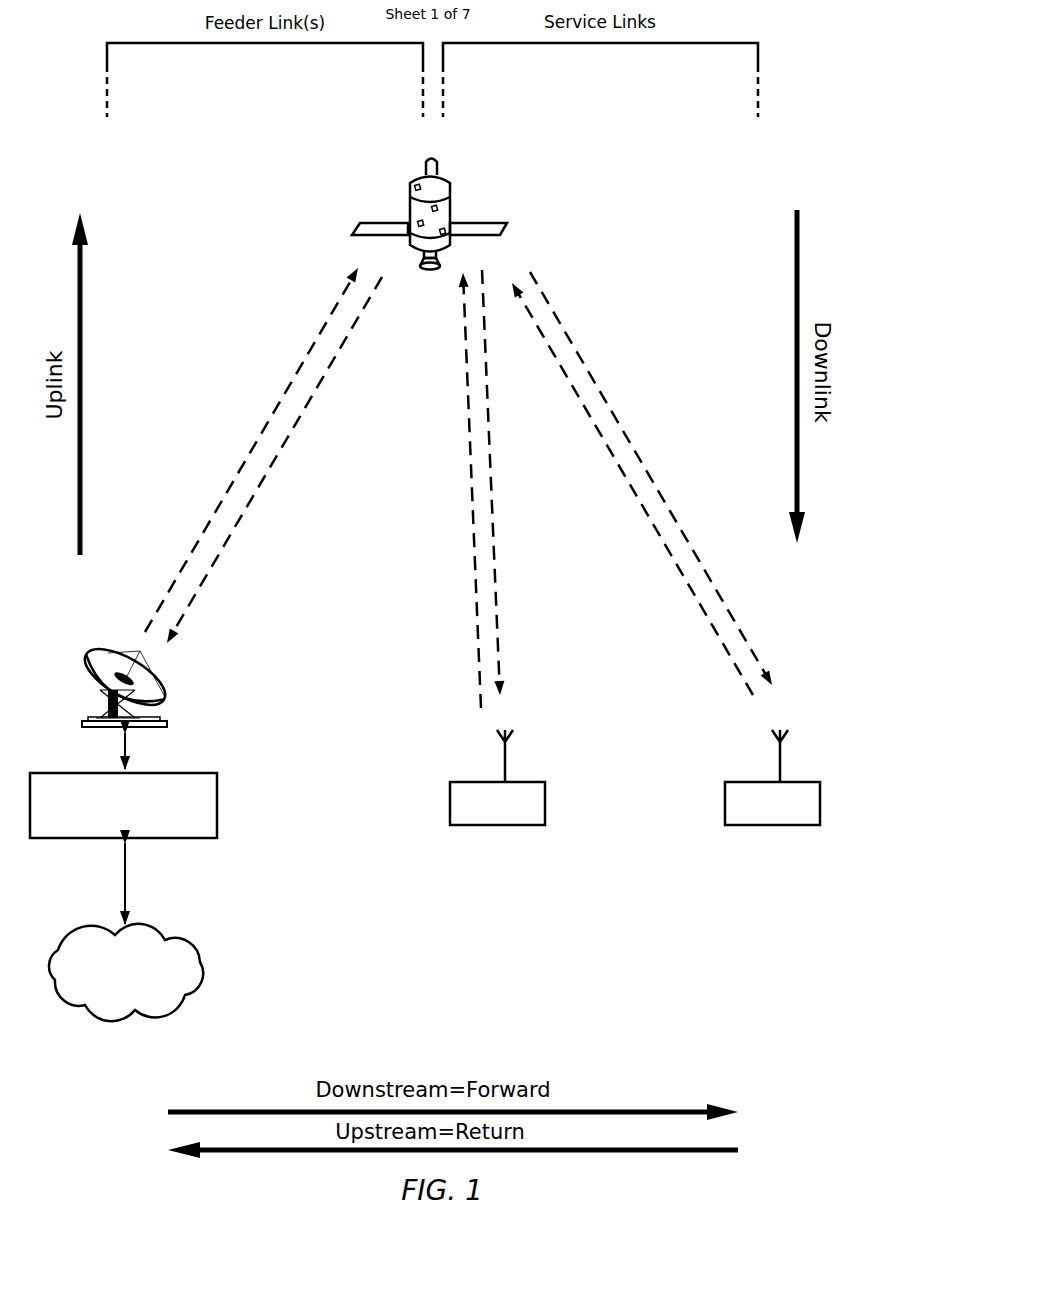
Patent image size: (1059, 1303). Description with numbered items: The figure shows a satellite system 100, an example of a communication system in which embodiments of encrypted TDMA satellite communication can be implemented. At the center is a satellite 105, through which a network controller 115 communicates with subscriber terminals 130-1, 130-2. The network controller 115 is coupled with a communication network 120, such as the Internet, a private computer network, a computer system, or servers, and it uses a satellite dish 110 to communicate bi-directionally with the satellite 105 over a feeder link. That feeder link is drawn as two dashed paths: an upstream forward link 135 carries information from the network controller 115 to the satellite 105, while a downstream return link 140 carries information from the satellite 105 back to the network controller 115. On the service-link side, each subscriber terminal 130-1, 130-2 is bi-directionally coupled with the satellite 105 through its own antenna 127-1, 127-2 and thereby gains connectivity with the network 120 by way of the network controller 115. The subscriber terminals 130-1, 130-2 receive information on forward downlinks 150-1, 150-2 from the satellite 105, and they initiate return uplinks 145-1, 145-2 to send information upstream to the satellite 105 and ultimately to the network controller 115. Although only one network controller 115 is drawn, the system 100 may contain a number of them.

The satellite system 100 is at (598, 953).
The satellite 105 is at (432, 157).
The satellite dish 110 is at (165, 697).
The network controller 115 is at (217, 805).
The communication network 120 is at (200, 965).
The antenna 127-1 is at (450, 726).
The antenna 127-2 is at (725, 726).
The subscriber terminal 130-1 is at (450, 800).
The subscriber terminal 130-2 is at (725, 800).
The upstream forward link 135 is at (250, 448).
The downstream return link 140 is at (318, 392).
The return uplink 145-1 is at (472, 497).
The return uplink 145-2 is at (636, 498).
The forward downlink 150-1 is at (497, 590).
The forward downlink 150-2 is at (593, 378).